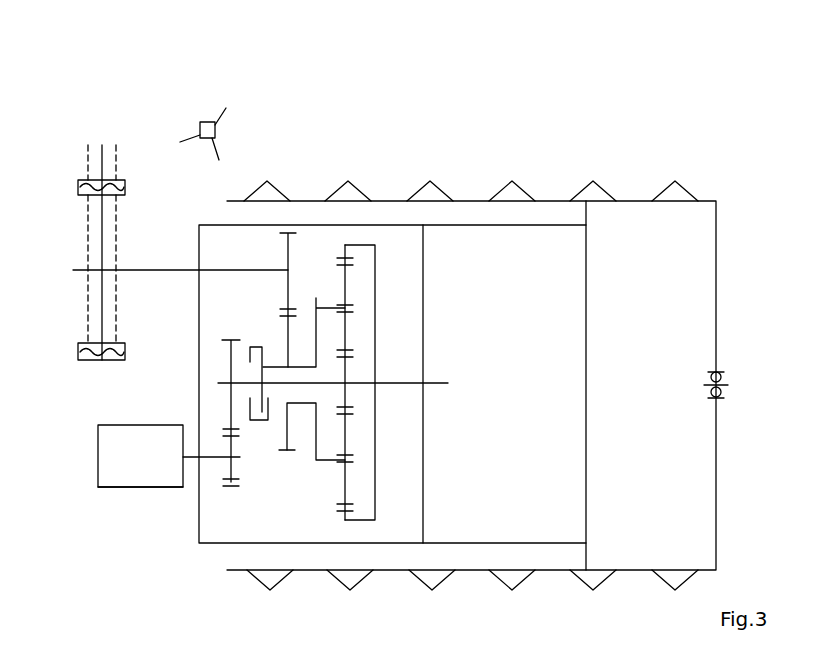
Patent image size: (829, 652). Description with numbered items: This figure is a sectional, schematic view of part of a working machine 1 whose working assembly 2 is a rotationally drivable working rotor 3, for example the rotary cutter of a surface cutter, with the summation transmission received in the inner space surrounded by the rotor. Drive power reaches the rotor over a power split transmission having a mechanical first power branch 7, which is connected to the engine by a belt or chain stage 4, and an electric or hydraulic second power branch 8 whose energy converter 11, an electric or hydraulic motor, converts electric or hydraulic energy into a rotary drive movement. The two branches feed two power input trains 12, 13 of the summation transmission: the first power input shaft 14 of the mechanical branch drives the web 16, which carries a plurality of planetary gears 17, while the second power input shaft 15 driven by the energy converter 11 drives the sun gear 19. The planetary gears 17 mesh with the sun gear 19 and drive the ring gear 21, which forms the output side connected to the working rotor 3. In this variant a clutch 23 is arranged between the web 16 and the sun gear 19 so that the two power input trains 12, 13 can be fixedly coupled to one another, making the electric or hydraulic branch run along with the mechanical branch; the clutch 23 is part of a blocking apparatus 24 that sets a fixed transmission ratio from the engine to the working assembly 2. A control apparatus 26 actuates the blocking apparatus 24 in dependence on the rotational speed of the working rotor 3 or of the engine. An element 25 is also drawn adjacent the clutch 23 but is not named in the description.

The working machine 1 is at (648, 102).
The working assembly 2 is at (530, 175).
The working rotor 3 is at (553, 203).
The belt or chain stage 4 is at (72, 218).
The mechanical first power branch 7 is at (72, 285).
The electric or hydraulic second power branch 8 is at (113, 420).
The energy converter 11 is at (120, 489).
The first power input train 12 is at (196, 276).
The second power input train 13 is at (200, 465).
The first power input shaft 14 is at (222, 272).
The second power input shaft 15 is at (213, 458).
The web 16 is at (304, 318).
The planetary gears 17 is at (350, 284).
The sun gear 19 is at (350, 393).
The ring gear 21 is at (367, 533).
The clutch 23 is at (271, 361).
The blocking apparatus 24 is at (263, 432).
The actuator 25 is at (249, 400).
The control apparatus 26 is at (220, 122).